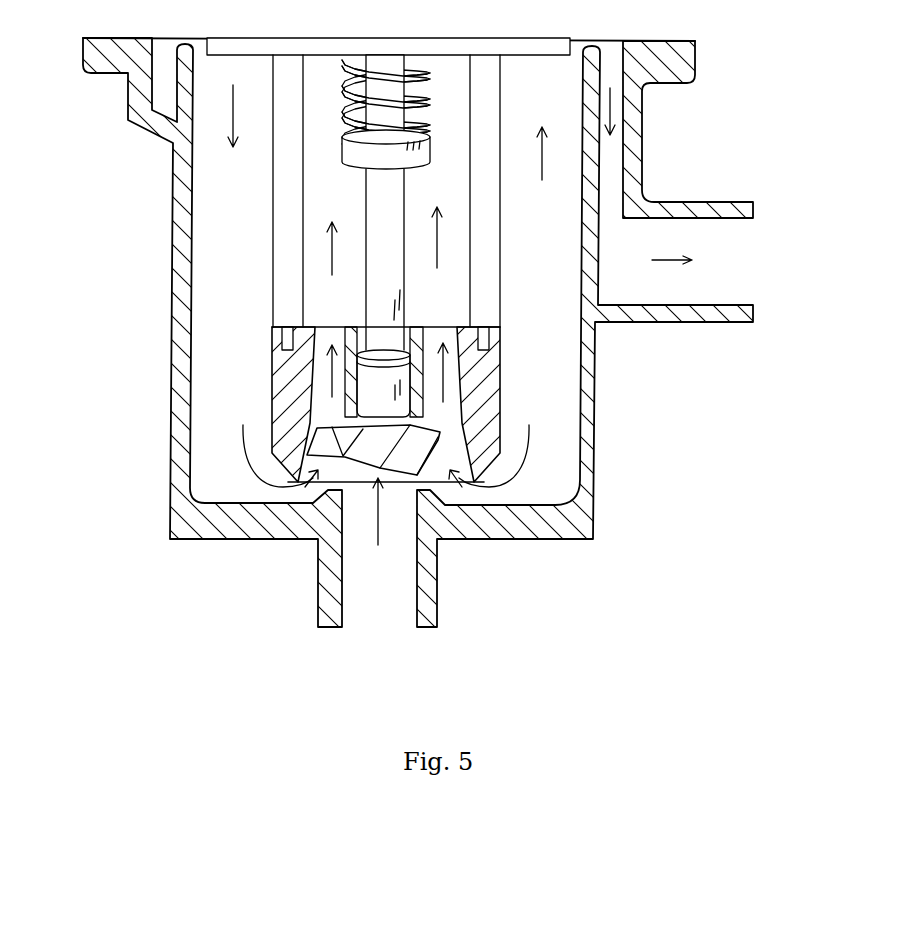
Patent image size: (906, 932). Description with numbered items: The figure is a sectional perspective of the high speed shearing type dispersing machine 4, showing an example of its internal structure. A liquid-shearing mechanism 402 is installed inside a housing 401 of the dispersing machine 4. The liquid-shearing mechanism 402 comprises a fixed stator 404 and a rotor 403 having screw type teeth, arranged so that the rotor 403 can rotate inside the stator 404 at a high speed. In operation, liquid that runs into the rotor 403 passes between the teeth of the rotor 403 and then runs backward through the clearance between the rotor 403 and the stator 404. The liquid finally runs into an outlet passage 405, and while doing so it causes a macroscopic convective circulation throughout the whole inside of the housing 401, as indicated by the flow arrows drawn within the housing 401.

The high speed shearing type dispersing machine 4 is at (133, 251).
The housing 401 is at (183, 328).
The liquid-shearing mechanism 402 is at (272, 393).
The rotor 403 is at (423, 441).
The fixed stator 404 is at (488, 426).
The outlet passage 405 is at (710, 258).